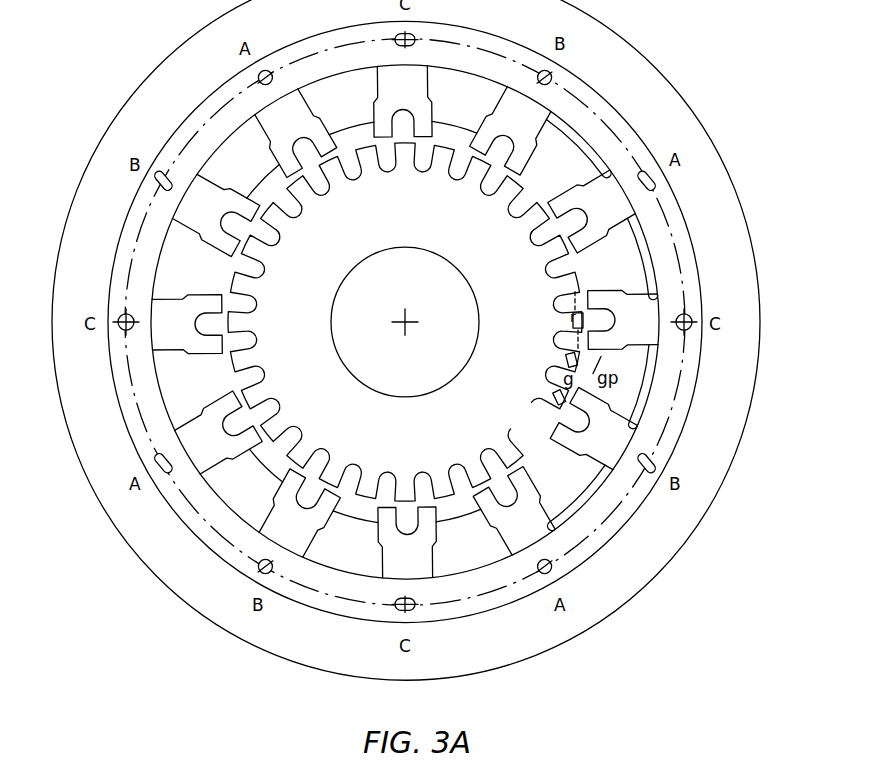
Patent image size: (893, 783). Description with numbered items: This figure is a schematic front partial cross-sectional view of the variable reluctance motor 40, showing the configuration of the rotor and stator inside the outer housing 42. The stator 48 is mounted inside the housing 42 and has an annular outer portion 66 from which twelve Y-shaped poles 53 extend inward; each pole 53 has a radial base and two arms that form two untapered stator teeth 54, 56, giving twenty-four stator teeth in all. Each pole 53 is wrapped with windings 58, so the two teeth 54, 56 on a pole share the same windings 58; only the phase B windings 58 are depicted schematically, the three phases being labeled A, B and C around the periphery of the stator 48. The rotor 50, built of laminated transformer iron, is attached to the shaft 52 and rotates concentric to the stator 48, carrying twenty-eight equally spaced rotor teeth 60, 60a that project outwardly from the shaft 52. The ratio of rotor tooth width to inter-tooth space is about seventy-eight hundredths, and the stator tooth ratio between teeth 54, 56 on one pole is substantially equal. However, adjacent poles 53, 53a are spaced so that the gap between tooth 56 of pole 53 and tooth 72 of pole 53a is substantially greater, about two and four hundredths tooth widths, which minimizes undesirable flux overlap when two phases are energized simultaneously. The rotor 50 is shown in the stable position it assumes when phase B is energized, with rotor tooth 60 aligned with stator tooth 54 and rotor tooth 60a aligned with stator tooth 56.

The motor 40 is at (590, 699).
The outer housing 42 is at (656, 104).
The stator 48 is at (223, 537).
The rotor 50 is at (405, 322).
The shaft 52 is at (452, 356).
The pole 53 is at (643, 473).
The adjacent pole 53a is at (606, 343).
The stator tooth 54 is at (563, 448).
The stator tooth 56 is at (594, 410).
The windings 58 is at (197, 233).
The rotor tooth 60 is at (557, 393).
The rotor tooth 60a is at (563, 358).
The annular outer portion 66 is at (657, 213).
The stator tooth 72 is at (618, 346).